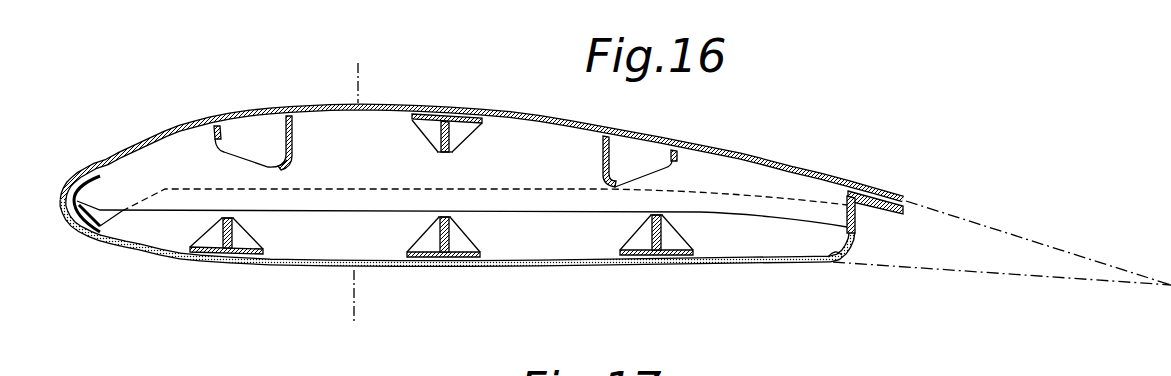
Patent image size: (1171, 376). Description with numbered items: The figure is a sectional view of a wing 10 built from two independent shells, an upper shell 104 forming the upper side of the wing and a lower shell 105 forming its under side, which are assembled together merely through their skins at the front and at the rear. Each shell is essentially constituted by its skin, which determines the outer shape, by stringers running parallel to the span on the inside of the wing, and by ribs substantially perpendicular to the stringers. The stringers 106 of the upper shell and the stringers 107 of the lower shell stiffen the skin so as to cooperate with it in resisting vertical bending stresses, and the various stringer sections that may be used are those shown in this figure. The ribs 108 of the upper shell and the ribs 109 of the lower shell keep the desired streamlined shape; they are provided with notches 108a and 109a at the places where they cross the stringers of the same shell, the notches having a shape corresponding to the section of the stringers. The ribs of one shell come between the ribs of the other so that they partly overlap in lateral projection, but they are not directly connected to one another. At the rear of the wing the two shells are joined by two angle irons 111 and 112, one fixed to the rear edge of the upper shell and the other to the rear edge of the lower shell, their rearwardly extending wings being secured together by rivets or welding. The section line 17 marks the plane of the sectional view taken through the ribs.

The airfoil wing section 10 is at (68, 190).
The upper shell 104 is at (505, 113).
The lower shell 105 is at (558, 259).
The stringers of the upper shell 106 is at (271, 113).
The stringers of the lower shell 107 is at (245, 255).
The ribs of the upper shell 108 is at (153, 165).
The notches of the upper ribs 108a is at (243, 143).
The ribs of the lower shell 109 is at (168, 228).
The notches of the lower ribs 109a is at (207, 240).
The angle iron 111 is at (879, 193).
The angle iron 112 is at (879, 208).
The section line 17- 17 is at (344, 88).